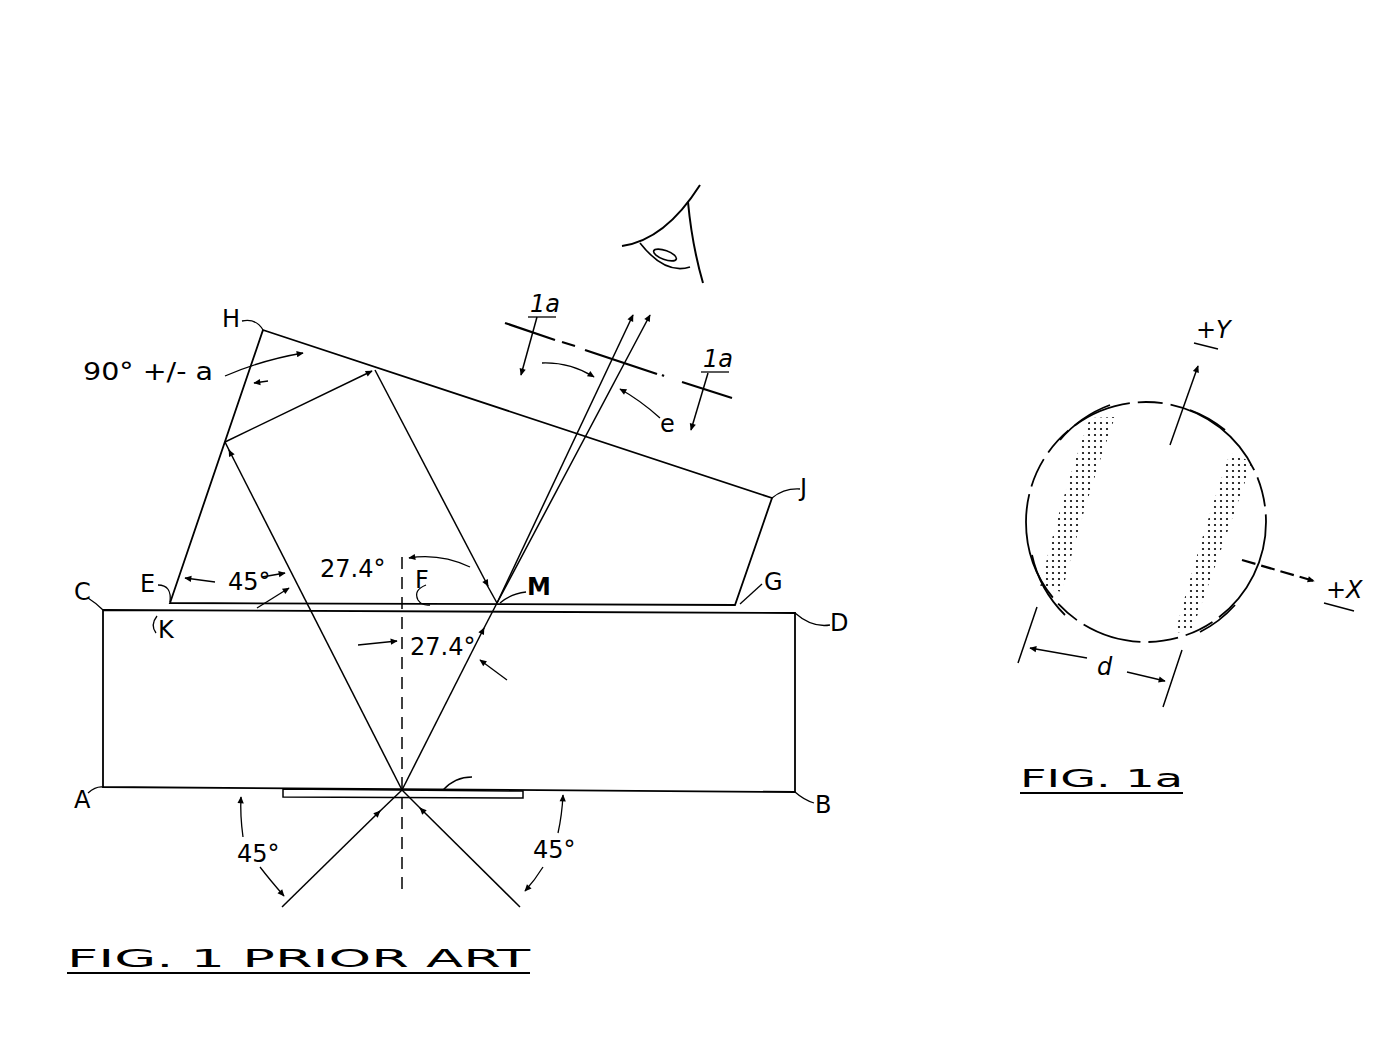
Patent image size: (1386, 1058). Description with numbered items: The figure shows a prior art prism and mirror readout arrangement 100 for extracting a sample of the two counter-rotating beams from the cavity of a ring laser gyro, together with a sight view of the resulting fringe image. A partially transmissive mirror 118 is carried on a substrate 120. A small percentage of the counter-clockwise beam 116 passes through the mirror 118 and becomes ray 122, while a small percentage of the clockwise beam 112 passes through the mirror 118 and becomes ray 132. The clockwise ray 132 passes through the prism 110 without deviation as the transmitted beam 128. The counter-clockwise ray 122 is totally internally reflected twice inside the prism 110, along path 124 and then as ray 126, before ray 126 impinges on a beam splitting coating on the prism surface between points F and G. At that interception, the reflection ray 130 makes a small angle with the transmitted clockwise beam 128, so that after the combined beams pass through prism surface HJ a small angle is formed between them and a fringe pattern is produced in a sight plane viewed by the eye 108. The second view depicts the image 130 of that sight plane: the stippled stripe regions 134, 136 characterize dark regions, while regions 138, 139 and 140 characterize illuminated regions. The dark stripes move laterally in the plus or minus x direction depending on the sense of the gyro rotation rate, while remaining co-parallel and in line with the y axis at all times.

In FIG. 1, the readout assembly 100 is at (845, 320).
In FIG. 1, the eye 108 is at (680, 250).
In FIG. 1, the prism 110 is at (647, 550).
In FIG. 1, the CW beam 112 is at (338, 853).
In FIG. 1, the CCW beam 116 is at (507, 897).
In FIG. 1, the partially transmissive mirror 118 is at (432, 799).
In FIG. 1, the substrate 120 is at (700, 695).
In FIG. 1, the ray 122 is at (354, 695).
In FIG. 1, the beam path in prism 124 is at (268, 423).
In FIG. 1, the ray 126 is at (425, 470).
In FIG. 1, the transmitted CW beam 128 is at (558, 498).
In FIG. 1, the reflection ray 130 is at (546, 503).
In FIG. 1A, the reflection ray 130 is at (1163, 530).
In FIG. 1, the CW ray 132 is at (448, 705).
In FIG. 1A, the CW ray 132 is at (1043, 575).
In FIG. 1A, the dark stripe region 134 is at (1235, 487).
In FIG. 1A, the dark stripe region 136 is at (1063, 497).
In FIG. 1A, the illuminated region 138 is at (1057, 443).
In FIG. 1A, the illuminated region 139 is at (1197, 435).
In FIG. 1A, the illuminated region 140 is at (1235, 580).